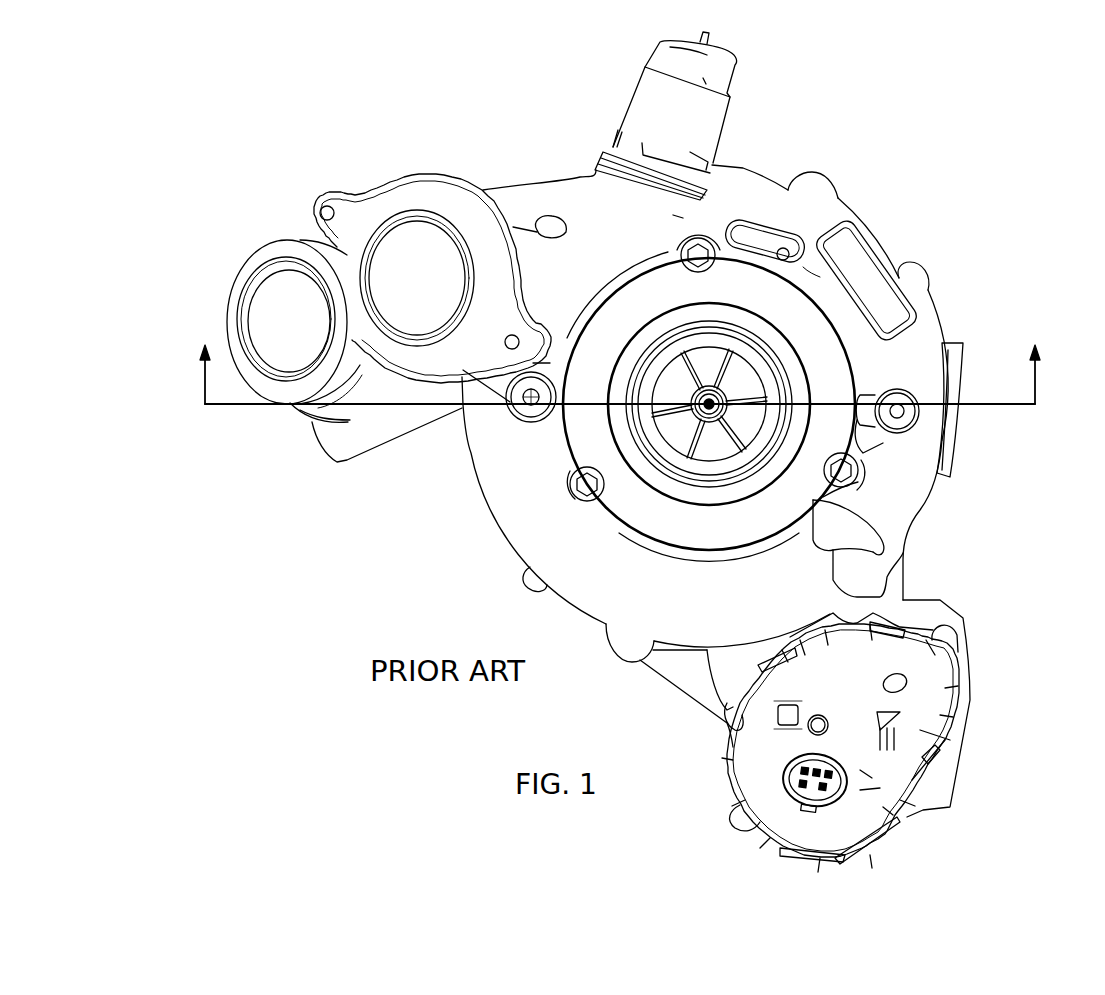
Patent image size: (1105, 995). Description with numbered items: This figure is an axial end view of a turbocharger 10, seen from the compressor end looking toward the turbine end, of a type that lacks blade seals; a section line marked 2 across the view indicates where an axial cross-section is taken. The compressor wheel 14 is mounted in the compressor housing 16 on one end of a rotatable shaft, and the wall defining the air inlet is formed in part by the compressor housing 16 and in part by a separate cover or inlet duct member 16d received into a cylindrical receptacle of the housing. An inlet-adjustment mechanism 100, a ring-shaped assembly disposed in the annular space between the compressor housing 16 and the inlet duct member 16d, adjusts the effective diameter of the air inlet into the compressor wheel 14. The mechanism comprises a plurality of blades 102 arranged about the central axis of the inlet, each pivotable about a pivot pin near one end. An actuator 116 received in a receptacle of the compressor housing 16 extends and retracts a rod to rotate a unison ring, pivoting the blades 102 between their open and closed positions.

The turbocharger 10 is at (930, 253).
The compressor wheel 14 is at (708, 452).
The compressor housing 16 is at (893, 484).
The inlet duct member 16d is at (660, 471).
The inlet-adjustment mechanism 100 is at (658, 341).
The blades 102 is at (740, 348).
The actuator 116 is at (657, 108).
The section line 2- 2 is at (620, 374).